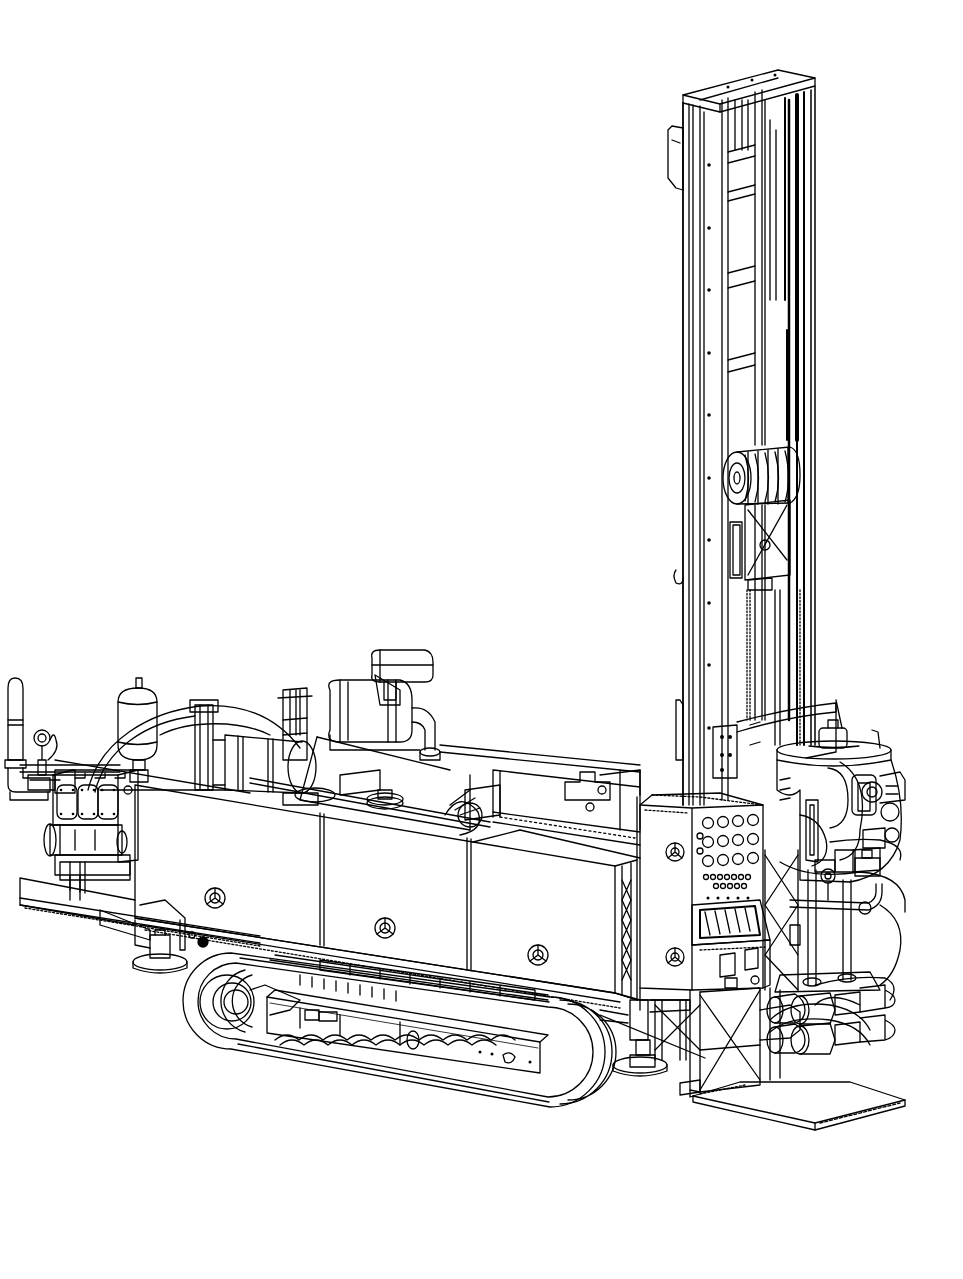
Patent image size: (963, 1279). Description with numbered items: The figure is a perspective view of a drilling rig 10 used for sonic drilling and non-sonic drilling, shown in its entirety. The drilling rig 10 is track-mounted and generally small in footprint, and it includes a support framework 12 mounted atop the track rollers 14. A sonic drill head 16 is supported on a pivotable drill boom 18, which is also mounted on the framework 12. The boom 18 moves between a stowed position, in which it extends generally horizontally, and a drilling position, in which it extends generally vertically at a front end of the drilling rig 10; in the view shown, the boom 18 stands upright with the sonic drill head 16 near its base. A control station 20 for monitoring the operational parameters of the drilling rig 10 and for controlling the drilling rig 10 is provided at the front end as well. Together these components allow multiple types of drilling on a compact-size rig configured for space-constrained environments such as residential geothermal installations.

The drilling rig 10 is at (853, 71).
The support framework 12 is at (188, 957).
The track rollers 14 is at (324, 1074).
The sonic drill head 16 is at (850, 742).
The pivotable drill boom 18 is at (814, 276).
The control station 20 is at (705, 978).